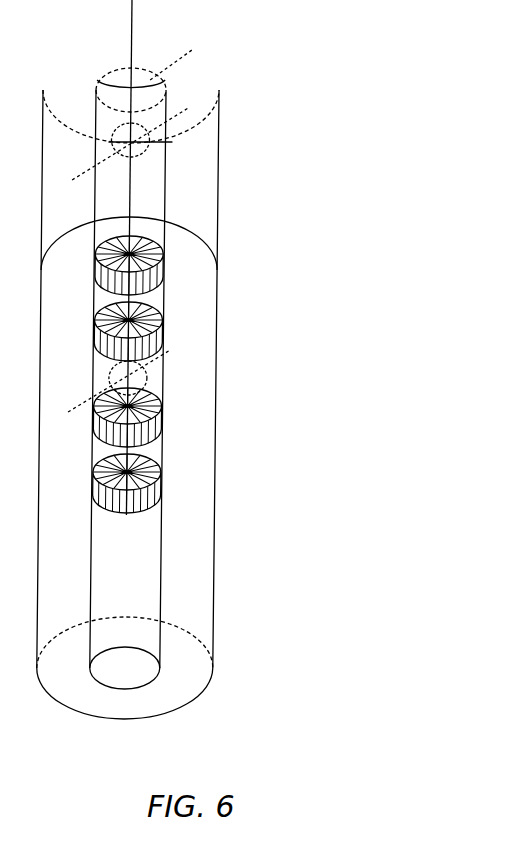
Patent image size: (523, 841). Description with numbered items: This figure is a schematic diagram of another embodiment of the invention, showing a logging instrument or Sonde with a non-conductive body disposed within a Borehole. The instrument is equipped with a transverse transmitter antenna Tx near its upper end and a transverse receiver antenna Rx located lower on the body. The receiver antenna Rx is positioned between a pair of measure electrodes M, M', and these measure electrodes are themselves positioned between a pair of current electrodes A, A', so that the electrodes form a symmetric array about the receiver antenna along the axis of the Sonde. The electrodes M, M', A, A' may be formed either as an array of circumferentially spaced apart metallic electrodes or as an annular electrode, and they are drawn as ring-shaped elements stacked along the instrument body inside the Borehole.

The logging instrument Sonde is at (167, 207).
The borehole Borehole is at (215, 560).
The transverse transmitter antenna Tx is at (137, 143).
The transverse receiver antenna Rx is at (135, 381).
The current electrode A is at (149, 265).
The measure electrode M is at (150, 331).
The measure electrode M' is at (150, 417).
The current electrode A' is at (147, 483).